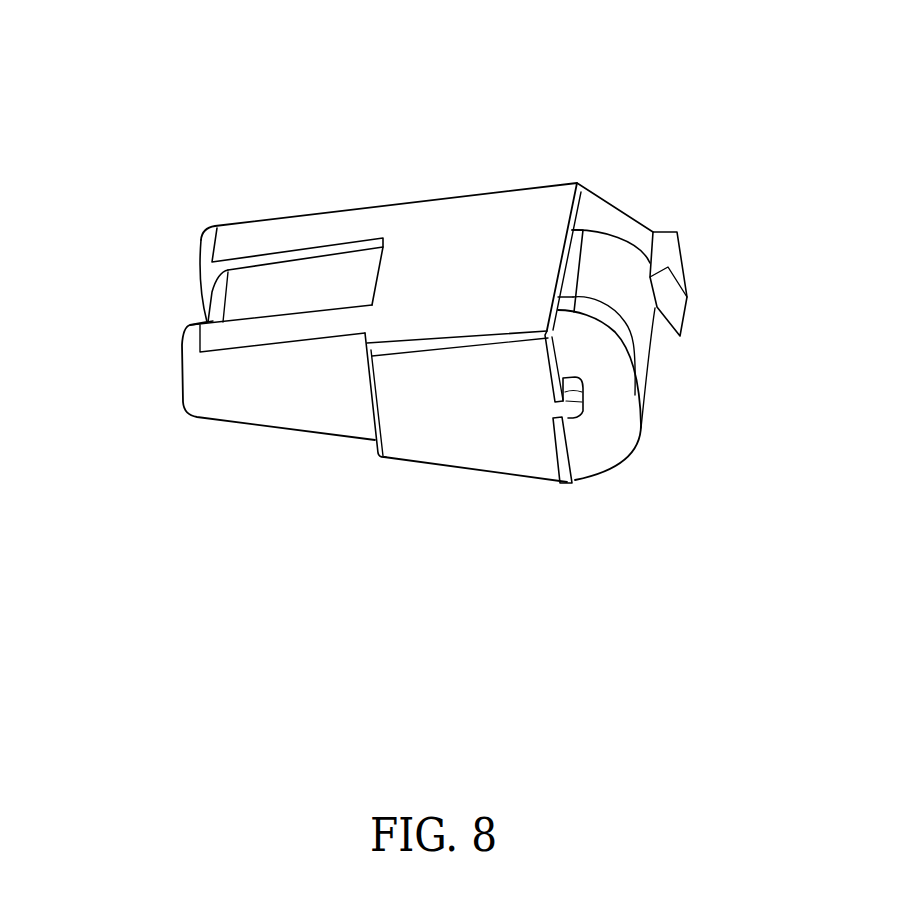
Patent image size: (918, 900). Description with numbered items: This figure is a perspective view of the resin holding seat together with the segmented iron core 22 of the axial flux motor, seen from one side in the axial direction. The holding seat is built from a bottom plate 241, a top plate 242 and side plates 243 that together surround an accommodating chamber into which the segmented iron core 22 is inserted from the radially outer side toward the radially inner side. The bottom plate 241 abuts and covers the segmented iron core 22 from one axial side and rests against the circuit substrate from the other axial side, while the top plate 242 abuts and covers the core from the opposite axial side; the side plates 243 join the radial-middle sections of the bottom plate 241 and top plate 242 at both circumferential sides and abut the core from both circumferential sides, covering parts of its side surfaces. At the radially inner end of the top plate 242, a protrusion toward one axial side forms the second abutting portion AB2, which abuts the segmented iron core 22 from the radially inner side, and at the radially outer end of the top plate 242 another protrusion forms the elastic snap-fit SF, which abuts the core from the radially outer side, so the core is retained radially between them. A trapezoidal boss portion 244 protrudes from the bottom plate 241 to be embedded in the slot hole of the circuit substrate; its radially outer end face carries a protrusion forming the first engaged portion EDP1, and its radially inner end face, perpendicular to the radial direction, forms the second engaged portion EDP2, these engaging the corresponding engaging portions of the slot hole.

The segmented iron core 22 is at (613, 260).
The bottom plate 241 is at (254, 393).
The top plate 242 is at (337, 230).
The side plates 243 is at (492, 252).
The boss portion 244 is at (457, 418).
The second abutting portion AB2 is at (204, 295).
The first engaged portion EDP1 is at (562, 410).
The second engaged portion EDP2 is at (373, 410).
The elastic snap-fit SF is at (663, 302).